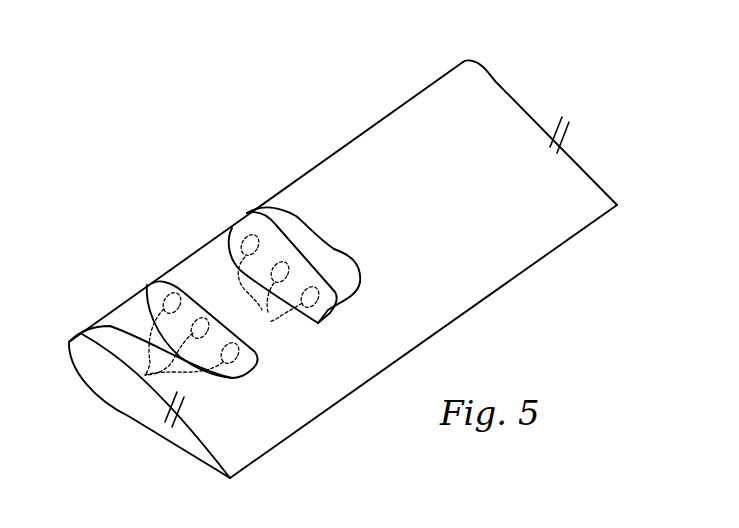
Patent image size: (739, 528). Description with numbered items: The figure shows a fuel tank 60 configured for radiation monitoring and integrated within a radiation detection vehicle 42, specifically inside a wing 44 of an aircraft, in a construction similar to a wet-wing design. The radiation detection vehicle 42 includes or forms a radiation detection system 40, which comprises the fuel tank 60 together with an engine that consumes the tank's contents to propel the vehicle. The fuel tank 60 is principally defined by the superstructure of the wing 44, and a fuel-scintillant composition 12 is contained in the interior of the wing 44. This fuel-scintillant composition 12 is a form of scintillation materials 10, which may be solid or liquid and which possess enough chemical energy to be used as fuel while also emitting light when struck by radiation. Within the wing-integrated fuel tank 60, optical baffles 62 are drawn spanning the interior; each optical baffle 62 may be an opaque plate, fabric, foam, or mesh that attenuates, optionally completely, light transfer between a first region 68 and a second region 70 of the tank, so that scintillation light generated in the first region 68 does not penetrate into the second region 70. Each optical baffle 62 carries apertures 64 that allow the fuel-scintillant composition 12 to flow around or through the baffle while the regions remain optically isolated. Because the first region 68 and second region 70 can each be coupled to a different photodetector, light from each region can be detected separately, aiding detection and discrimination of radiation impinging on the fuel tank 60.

The scintillation materials 10 is at (301, 240).
The fuel-scintillant composition 12 is at (277, 222).
The radiation detection system 40 is at (137, 128).
The radiation detection vehicle 42 is at (150, 101).
The wing 44 is at (372, 127).
The fuel tank 60 is at (318, 163).
The optical baffle 62 is at (183, 285).
The apertures 64 is at (143, 376).
The first region 68 is at (343, 270).
The second region 70 is at (283, 335).